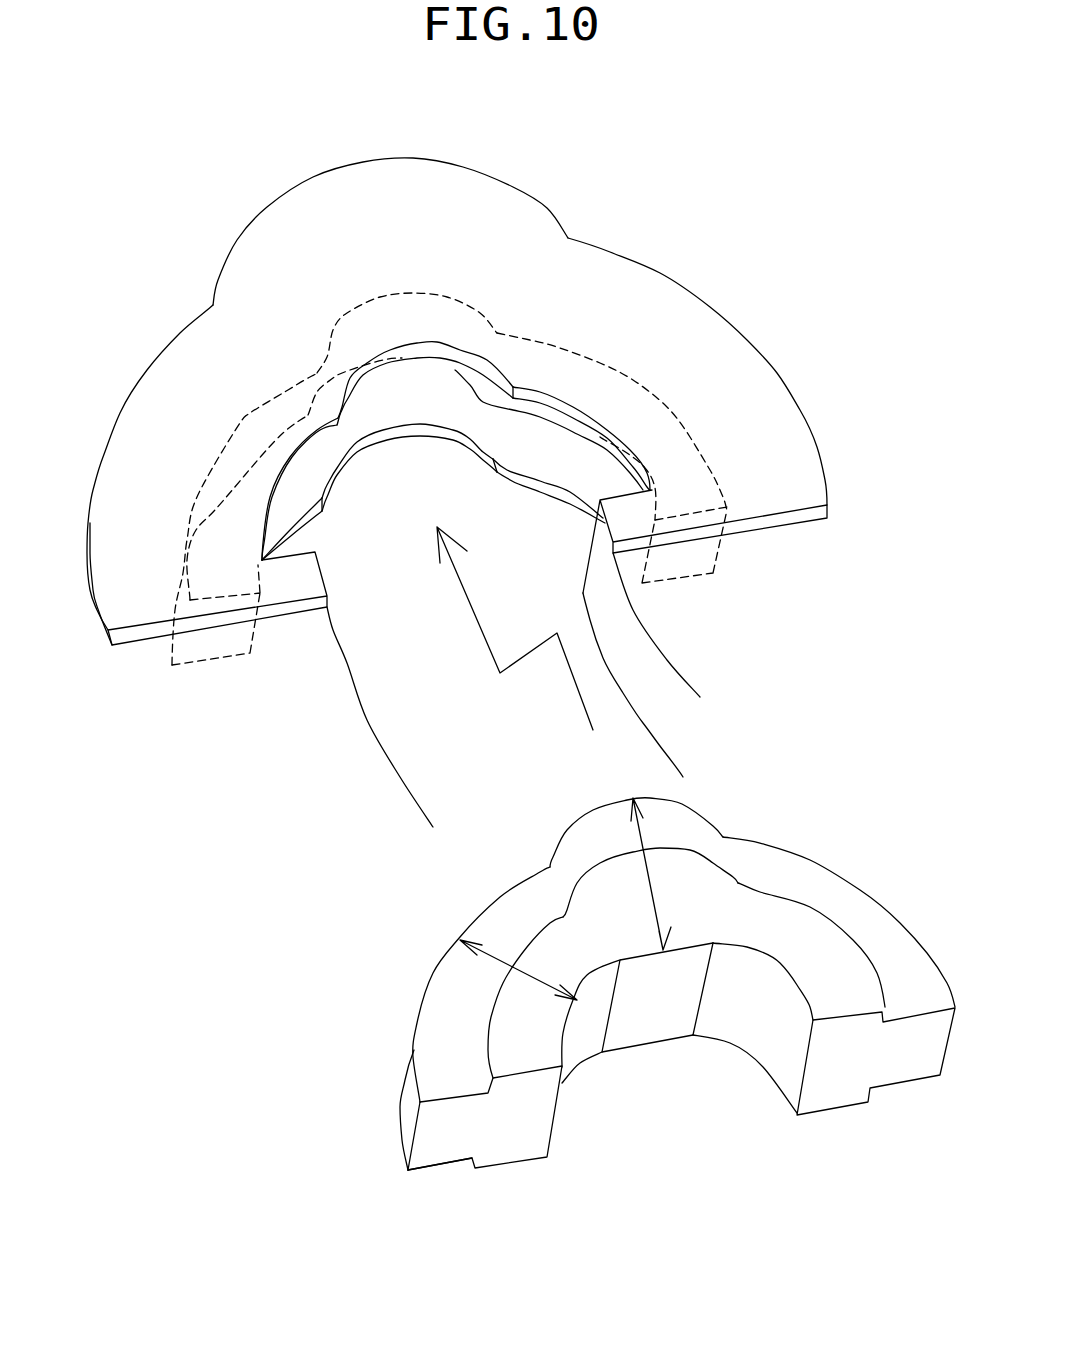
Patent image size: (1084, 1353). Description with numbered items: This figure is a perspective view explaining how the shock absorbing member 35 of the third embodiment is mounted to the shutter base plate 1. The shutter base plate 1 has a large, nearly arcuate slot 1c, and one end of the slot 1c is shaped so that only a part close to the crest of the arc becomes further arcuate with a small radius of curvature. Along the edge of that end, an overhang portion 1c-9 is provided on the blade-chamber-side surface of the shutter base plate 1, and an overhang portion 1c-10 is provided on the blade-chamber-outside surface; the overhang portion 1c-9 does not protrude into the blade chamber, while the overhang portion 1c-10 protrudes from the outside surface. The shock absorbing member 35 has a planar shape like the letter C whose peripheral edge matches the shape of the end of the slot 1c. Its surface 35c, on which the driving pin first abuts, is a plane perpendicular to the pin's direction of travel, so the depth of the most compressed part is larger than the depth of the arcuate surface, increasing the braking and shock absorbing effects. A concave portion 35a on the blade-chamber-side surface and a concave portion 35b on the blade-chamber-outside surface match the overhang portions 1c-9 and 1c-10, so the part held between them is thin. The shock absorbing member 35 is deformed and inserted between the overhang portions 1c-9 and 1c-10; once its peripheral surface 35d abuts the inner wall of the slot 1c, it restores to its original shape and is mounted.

The shutter base plate 1 is at (790, 618).
The slot 1c is at (350, 664).
The overhang portion 1c-9 is at (340, 452).
The overhang portion 1c-10 is at (583, 397).
The shock absorbing member 35 is at (332, 1007).
The concave portion 35a is at (437, 1173).
The concave portion 35b is at (450, 1090).
The surface 35c is at (652, 1027).
The peripheral surface 35d is at (407, 1125).